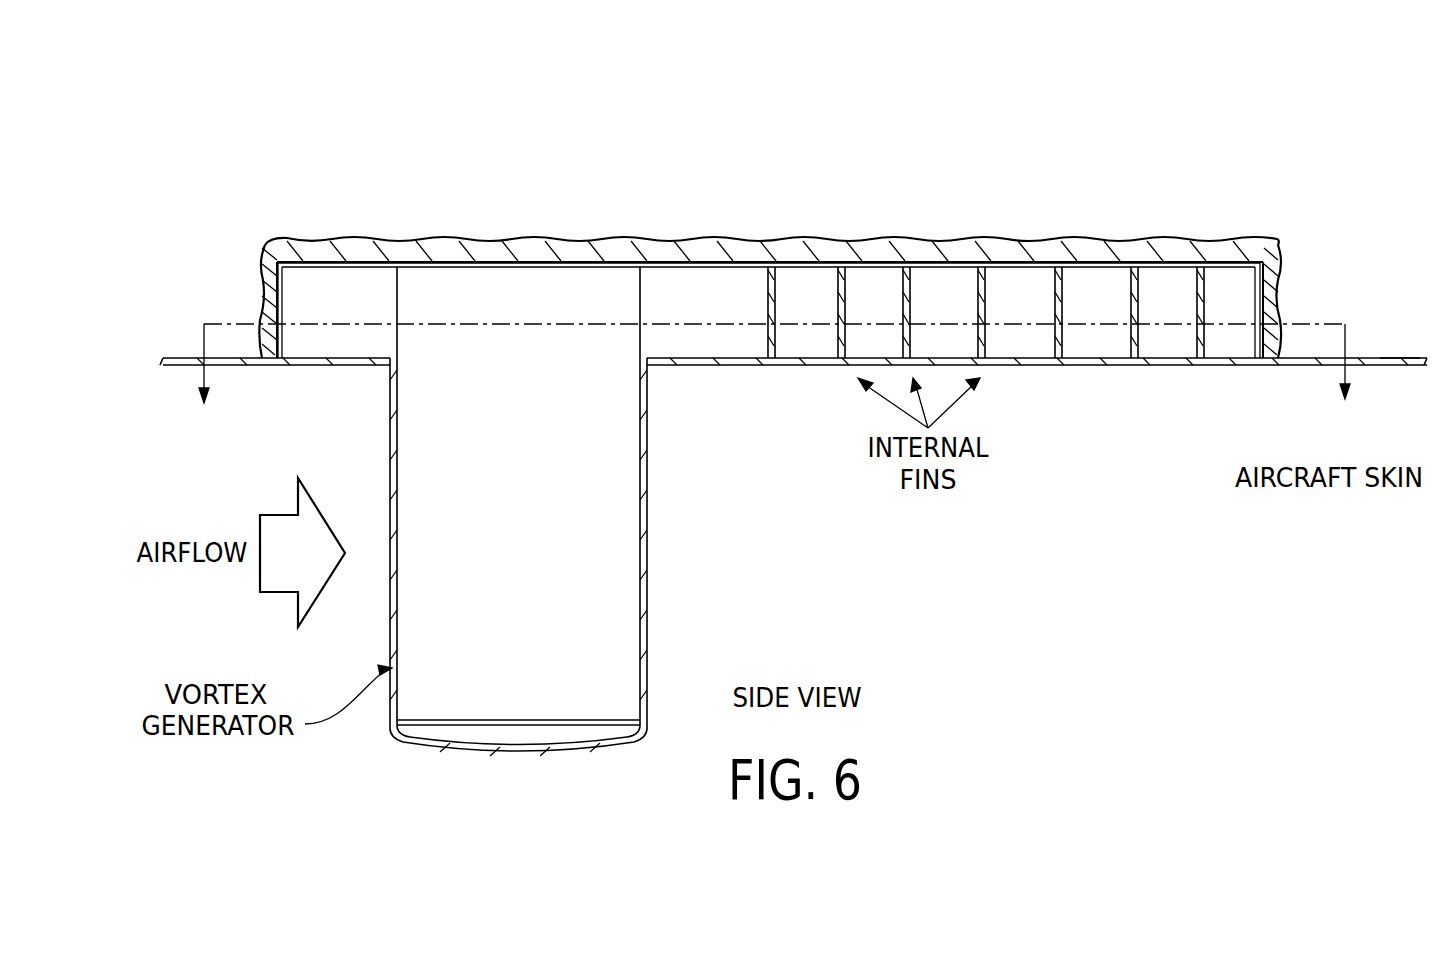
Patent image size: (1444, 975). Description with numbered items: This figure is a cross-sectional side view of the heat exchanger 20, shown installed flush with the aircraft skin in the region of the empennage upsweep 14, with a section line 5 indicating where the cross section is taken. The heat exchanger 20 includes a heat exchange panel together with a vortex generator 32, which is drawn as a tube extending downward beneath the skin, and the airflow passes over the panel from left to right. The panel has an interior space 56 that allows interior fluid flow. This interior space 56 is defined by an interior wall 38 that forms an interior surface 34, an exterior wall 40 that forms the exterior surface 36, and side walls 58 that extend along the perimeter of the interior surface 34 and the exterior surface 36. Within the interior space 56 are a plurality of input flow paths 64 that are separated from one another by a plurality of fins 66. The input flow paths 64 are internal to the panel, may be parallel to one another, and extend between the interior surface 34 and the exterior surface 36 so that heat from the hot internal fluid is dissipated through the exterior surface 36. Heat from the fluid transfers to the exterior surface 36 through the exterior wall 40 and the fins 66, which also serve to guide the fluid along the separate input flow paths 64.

The section line 5- 5 is at (775, 381).
The empennage upsweep 14 is at (1422, 366).
The heat exchanger 20 is at (1330, 218).
The vortex generator 32 is at (647, 553).
The interior surface 34 is at (1230, 282).
The exterior surface 36 is at (1120, 366).
The interior wall 38 is at (1278, 250).
The exterior wall 40 is at (1402, 357).
The interior space 56 is at (705, 339).
The side wall 58 is at (263, 287).
The input flow path 64 is at (1248, 350).
The fin 66 is at (1210, 336).